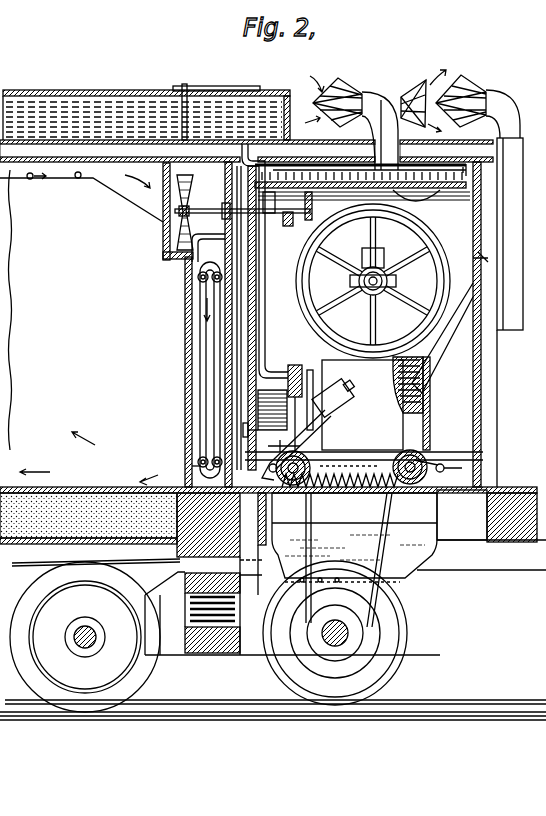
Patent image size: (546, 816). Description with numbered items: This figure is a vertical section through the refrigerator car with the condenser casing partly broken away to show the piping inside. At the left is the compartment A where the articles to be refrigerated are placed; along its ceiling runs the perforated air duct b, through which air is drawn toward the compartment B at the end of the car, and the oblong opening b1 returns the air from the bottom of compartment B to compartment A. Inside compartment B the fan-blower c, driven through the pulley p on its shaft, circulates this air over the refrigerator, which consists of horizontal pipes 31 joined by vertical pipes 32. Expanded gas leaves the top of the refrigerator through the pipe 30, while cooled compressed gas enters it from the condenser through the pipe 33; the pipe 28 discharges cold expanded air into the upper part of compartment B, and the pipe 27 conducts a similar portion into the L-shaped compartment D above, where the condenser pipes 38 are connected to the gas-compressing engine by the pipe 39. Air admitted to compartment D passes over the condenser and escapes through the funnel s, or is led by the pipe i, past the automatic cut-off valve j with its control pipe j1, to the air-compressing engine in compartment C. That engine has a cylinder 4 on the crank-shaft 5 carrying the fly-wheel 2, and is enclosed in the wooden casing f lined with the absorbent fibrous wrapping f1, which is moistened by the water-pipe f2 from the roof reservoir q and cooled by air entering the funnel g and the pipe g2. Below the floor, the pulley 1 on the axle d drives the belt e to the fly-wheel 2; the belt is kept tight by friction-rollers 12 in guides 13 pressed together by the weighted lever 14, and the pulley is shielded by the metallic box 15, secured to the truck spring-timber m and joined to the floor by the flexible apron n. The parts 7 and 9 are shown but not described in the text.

The water tank q is at (146, 112).
The flexible apron n is at (351, 118).
The funnel s is at (423, 98).
The funnel g is at (479, 277).
The gas-supply pipe 30 is at (340, 158).
The condenser compartment D is at (215, 149).
The pipe 39 is at (470, 172).
The air duct b is at (70, 180).
The pipe 28 is at (223, 204).
The pulley p is at (312, 206).
The pipe i is at (338, 462).
The connecting pipes 38 is at (288, 222).
The fan-blower c is at (166, 238).
The machinery compartment C is at (368, 324).
The crank-shaft 5 is at (378, 262).
The driven pulley 2 is at (432, 281).
The water-pipe f2 is at (474, 270).
The refrigerating compartment A is at (81, 327).
The pipe g2 is at (442, 338).
The fan and refrigerator compartment B is at (208, 370).
The automatic cut-off valve j is at (292, 376).
The pipe j1 is at (311, 372).
The single-acting cylinder 4 is at (393, 378).
The lever 14 is at (308, 429).
The wooden casing f is at (362, 405).
The absorbent fibrous wrapping f1 is at (431, 404).
The vertical pipes 32 is at (210, 362).
The pipe 27 is at (252, 420).
The pipe 33 is at (240, 430).
The lever 9 is at (281, 443).
The friction-rollers 12 is at (405, 458).
The guides 13 is at (293, 486).
The oblong opening b1 is at (192, 468).
The horizontal refrigerator pipes 31 is at (210, 474).
The driving-belt e is at (354, 537).
The metallic box 15 is at (349, 560).
The axle d is at (335, 633).
The pulley 1 is at (208, 636).
The bar 7 is at (132, 556).
The spring-timber m is at (212, 645).